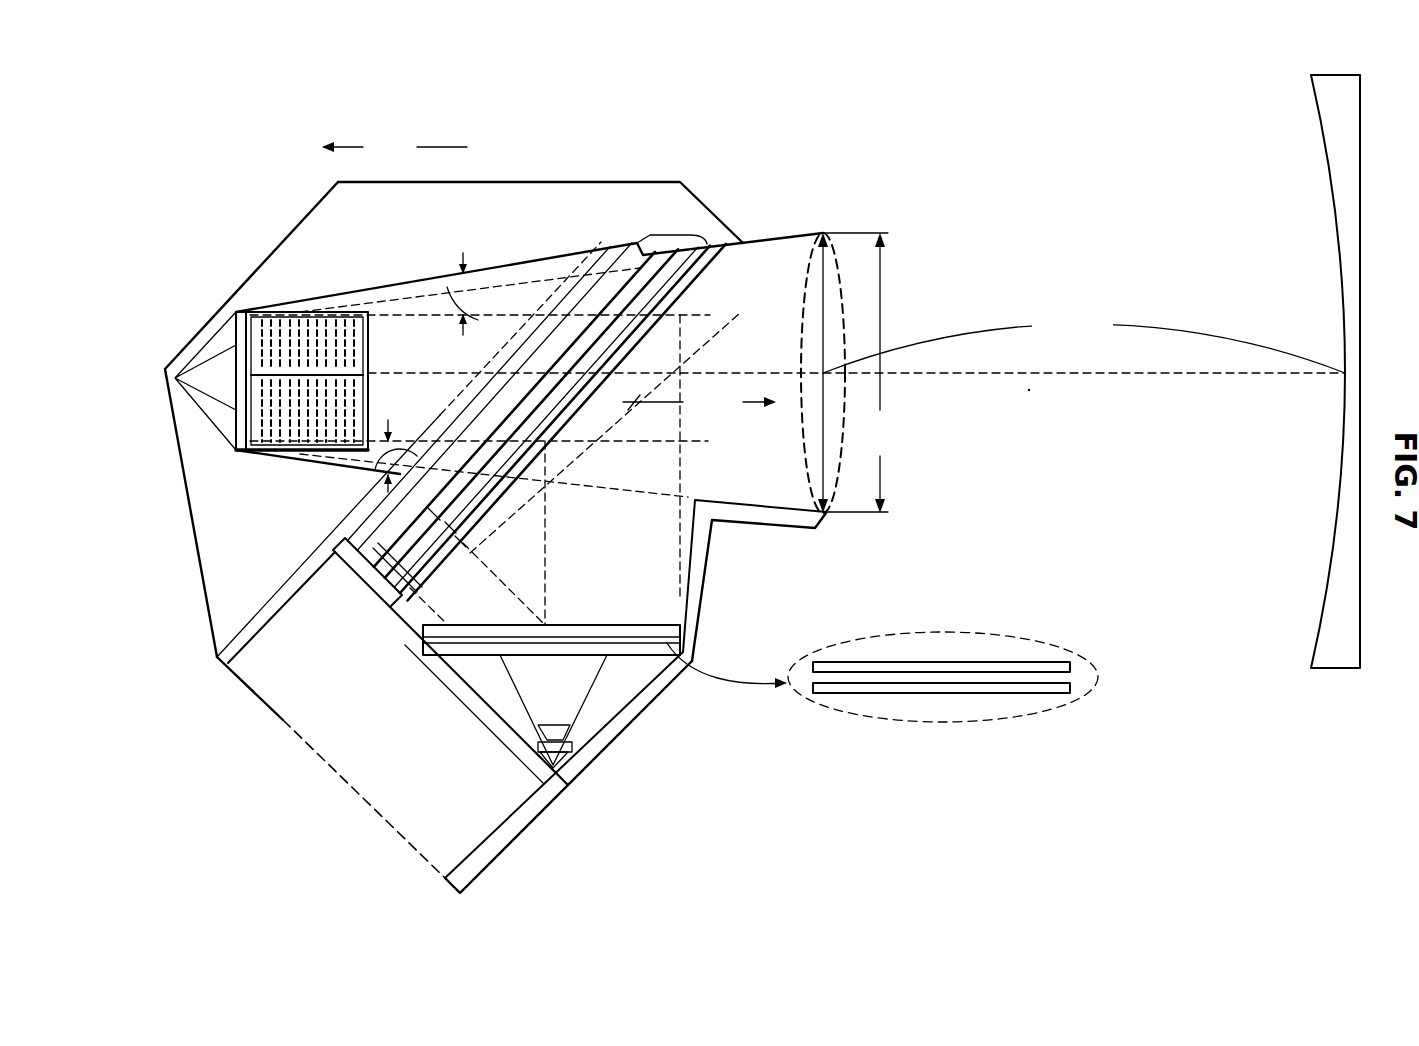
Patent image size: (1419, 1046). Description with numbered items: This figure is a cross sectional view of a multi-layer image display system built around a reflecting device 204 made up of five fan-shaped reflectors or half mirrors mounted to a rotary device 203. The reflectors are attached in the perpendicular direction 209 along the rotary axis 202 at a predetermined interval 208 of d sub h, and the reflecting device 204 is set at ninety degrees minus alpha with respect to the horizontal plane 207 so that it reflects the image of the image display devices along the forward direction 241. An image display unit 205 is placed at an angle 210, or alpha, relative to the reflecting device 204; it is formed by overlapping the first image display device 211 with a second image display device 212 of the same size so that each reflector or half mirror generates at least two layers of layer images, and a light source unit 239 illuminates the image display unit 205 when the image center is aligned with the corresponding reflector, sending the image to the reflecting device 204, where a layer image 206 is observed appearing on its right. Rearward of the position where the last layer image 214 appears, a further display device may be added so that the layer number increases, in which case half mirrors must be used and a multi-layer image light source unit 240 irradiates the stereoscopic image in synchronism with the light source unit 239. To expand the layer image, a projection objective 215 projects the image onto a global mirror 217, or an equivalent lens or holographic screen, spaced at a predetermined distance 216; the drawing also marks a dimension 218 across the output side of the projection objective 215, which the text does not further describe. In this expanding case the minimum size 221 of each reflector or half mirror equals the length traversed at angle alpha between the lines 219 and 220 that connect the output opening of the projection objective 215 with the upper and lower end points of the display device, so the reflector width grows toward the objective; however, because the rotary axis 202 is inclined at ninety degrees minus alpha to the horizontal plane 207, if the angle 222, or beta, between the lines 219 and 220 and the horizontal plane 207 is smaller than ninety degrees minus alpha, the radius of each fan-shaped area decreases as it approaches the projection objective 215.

The rotary axis 202 is at (348, 580).
The rotary device 203 is at (255, 692).
The reflecting device 204 is at (660, 234).
The image display unit 205 is at (917, 709).
The layer image 206 is at (333, 310).
The horizontal plane 207 is at (394, 147).
The predetermined interval 208 is at (422, 557).
The perpendicular direction 209 is at (387, 612).
The angle 210 is at (422, 630).
The first image display device 211 is at (1070, 665).
The second image display device 212 is at (1075, 690).
The last layer image 214 is at (237, 310).
The projection objective 215 is at (822, 320).
The predetermined distance 216 is at (1084, 342).
The global mirror 217 is at (1322, 135).
The lens aperture dimension 218 is at (865, 373).
The line 219 is at (610, 488).
The line 220 is at (520, 262).
The minimum size 221 is at (537, 422).
The angle 222 is at (447, 287).
The light source unit 239 is at (560, 766).
The multi-layer image light source unit 240 is at (190, 353).
The forward direction 241 is at (699, 397).